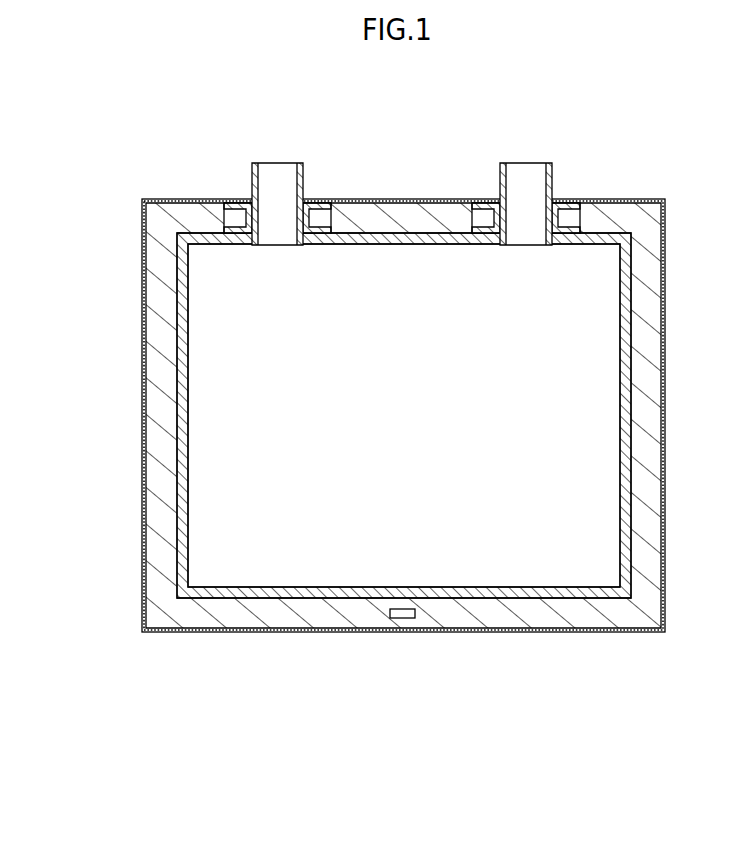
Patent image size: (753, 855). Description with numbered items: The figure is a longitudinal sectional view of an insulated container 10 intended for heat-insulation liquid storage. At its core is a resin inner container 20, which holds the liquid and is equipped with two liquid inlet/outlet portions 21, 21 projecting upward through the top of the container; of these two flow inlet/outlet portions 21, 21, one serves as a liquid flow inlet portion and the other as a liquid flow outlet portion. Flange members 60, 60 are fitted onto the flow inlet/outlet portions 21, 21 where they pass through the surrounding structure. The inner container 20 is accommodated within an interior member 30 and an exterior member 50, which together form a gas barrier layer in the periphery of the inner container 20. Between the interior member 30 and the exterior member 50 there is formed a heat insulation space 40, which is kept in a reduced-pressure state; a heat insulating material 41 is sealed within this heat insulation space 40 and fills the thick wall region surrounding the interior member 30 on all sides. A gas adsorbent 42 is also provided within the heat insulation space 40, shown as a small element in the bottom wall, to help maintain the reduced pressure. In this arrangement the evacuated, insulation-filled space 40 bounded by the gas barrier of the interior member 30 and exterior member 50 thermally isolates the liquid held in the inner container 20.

The insulated container 10 is at (108, 185).
The resin inner container 20 is at (187, 320).
The liquid inlet/outlet portion 21 is at (305, 176).
The interior member 30 is at (179, 392).
The heat insulation space 40 is at (167, 451).
The heat insulating material 41 is at (160, 513).
The gas adsorbent 42 is at (401, 618).
The exterior member 50 is at (145, 571).
The flange member 60 is at (230, 218).